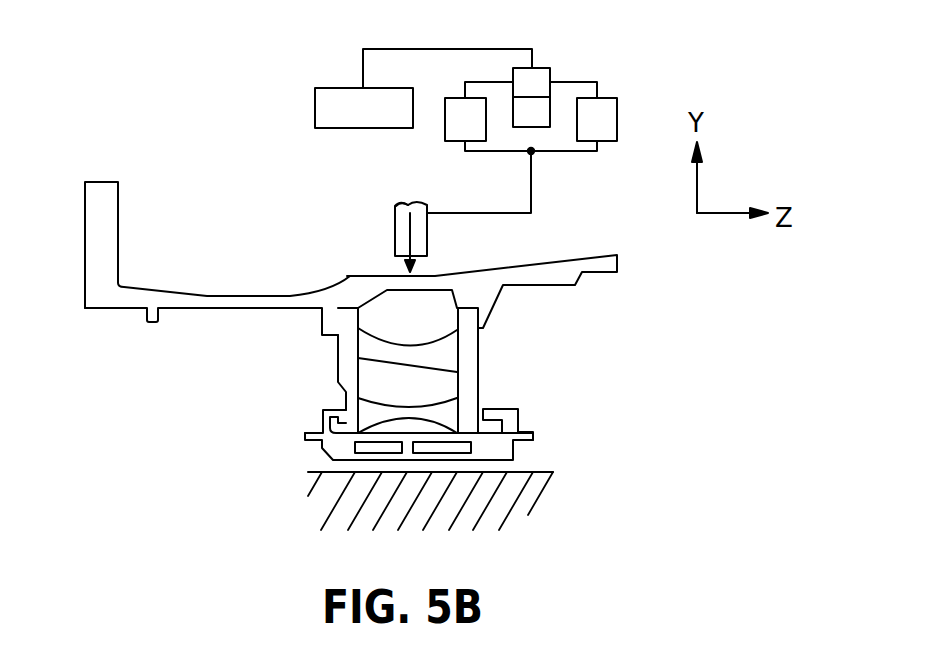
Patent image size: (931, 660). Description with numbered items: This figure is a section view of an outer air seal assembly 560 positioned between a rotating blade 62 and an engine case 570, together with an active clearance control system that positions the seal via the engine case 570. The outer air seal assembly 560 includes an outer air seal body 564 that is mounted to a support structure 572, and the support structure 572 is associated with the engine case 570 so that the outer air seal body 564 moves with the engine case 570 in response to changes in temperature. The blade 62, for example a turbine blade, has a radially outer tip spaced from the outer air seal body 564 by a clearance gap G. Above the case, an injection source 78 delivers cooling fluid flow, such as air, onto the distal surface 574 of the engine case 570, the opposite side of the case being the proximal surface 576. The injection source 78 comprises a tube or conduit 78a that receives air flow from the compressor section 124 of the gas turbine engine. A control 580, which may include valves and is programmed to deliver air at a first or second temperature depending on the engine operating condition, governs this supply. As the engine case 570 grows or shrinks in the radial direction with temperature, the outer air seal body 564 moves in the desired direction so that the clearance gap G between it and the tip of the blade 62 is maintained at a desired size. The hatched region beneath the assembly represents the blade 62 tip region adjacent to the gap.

The compressor section 124 is at (423, 88).
The control 580 is at (552, 72).
The injection source 78 is at (445, 195).
The tube or conduit 78a is at (395, 210).
The engine case 570 is at (254, 296).
The distal surface 574 is at (343, 283).
The support structure 572 is at (325, 372).
The proximal surface 576 is at (420, 292).
The outer air seal body 564 is at (518, 425).
The outer air seal assembly 560 is at (570, 350).
The clearance gap G is at (307, 462).
The blade 62 is at (338, 500).